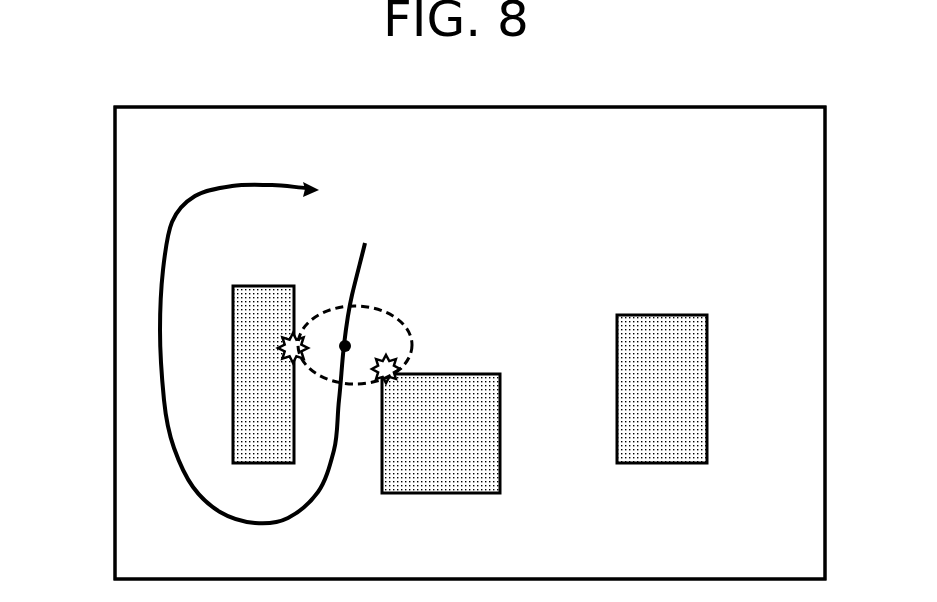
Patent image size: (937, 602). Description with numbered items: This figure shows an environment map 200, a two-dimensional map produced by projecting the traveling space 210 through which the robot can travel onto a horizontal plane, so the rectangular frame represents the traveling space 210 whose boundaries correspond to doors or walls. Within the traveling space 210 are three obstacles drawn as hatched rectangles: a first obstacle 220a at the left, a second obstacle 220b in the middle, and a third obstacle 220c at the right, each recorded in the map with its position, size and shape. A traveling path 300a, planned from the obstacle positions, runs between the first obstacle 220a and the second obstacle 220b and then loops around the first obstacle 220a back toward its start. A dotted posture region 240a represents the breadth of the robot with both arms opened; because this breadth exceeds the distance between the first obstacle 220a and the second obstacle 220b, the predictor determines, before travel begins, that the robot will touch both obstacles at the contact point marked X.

The environment map 200 is at (83, 152).
The traveling space 210 is at (854, 150).
The first obstacle 220a is at (250, 285).
The second obstacle 220b is at (486, 358).
The obstacle 220c is at (662, 314).
The posture region 240a is at (428, 296).
The traveling path 300a is at (300, 511).